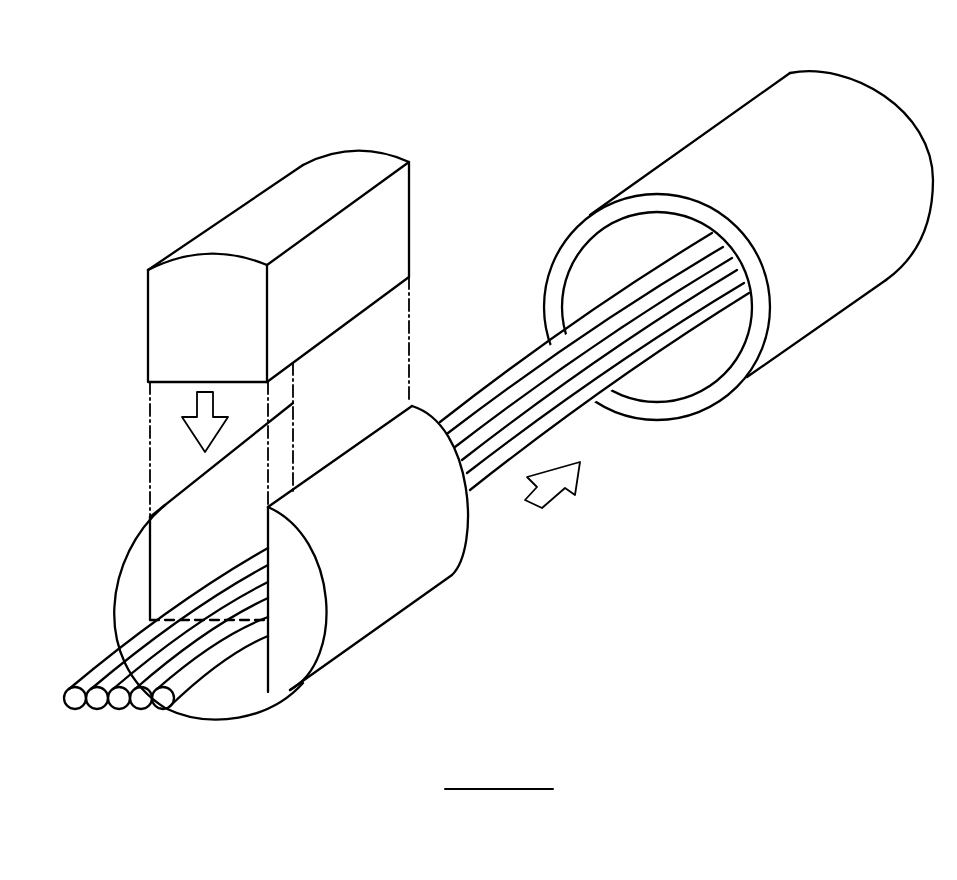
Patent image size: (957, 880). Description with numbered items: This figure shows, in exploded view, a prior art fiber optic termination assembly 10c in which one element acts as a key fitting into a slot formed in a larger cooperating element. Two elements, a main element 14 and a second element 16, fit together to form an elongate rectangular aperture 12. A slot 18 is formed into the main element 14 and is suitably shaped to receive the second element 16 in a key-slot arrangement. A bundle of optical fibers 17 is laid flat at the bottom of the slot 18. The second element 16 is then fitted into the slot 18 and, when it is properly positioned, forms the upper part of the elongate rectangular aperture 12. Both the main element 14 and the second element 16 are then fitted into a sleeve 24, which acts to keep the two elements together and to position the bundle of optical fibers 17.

The fiber optic termination assembly 10c is at (490, 110).
The elongate rectangular aperture 12 is at (292, 692).
The main element 14 is at (370, 637).
The second element 16 is at (238, 208).
The bundle of optical fibers 17 is at (175, 712).
The slot 18 is at (162, 532).
The sleeve 24 is at (690, 405).